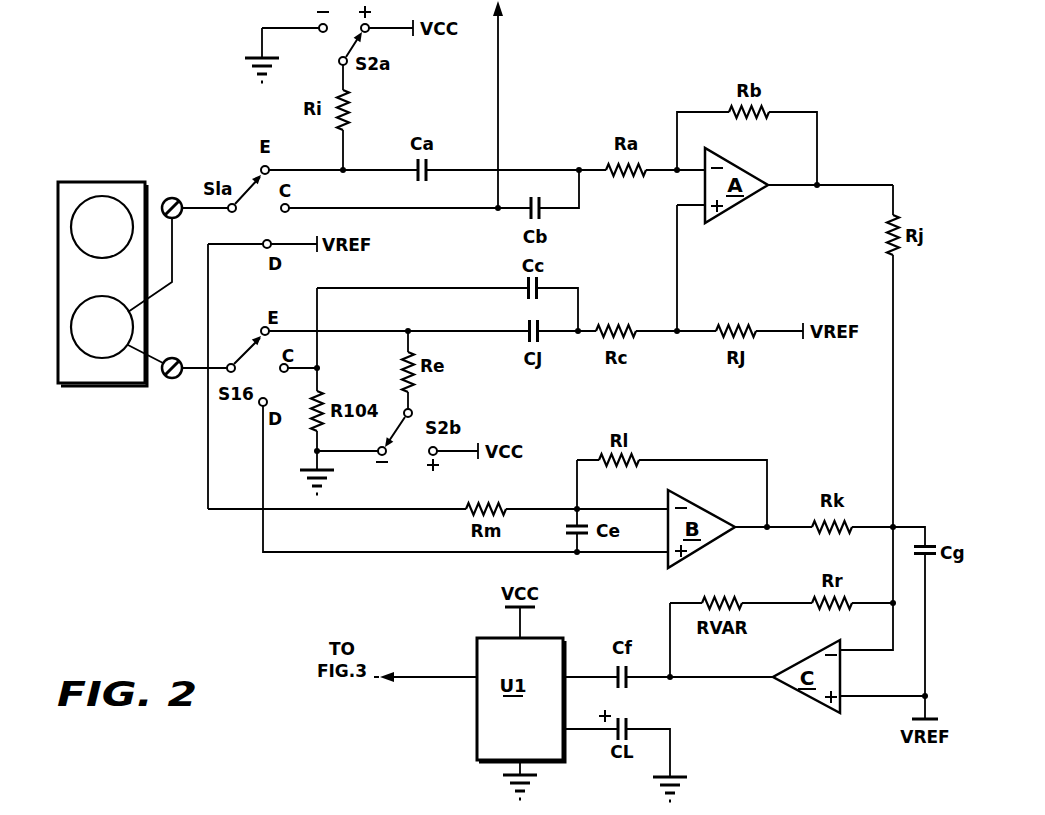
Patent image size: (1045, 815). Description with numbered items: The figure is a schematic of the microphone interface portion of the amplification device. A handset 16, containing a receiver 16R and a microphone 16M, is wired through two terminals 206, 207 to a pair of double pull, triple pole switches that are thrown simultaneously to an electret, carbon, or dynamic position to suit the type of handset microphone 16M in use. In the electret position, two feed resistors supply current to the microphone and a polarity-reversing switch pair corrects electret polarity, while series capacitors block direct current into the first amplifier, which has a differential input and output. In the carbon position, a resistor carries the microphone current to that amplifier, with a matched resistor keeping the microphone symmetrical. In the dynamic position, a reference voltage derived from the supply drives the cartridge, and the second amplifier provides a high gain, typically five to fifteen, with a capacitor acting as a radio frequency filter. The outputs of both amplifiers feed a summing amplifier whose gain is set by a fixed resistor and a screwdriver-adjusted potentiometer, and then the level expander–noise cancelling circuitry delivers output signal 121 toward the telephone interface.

The handset 16 is at (115, 271).
The handset receiver 16R is at (112, 257).
The handset microphone 16M is at (103, 358).
The input terminal 206 is at (172, 198).
The input terminal 207 is at (176, 380).
The output signal 121 is at (427, 677).